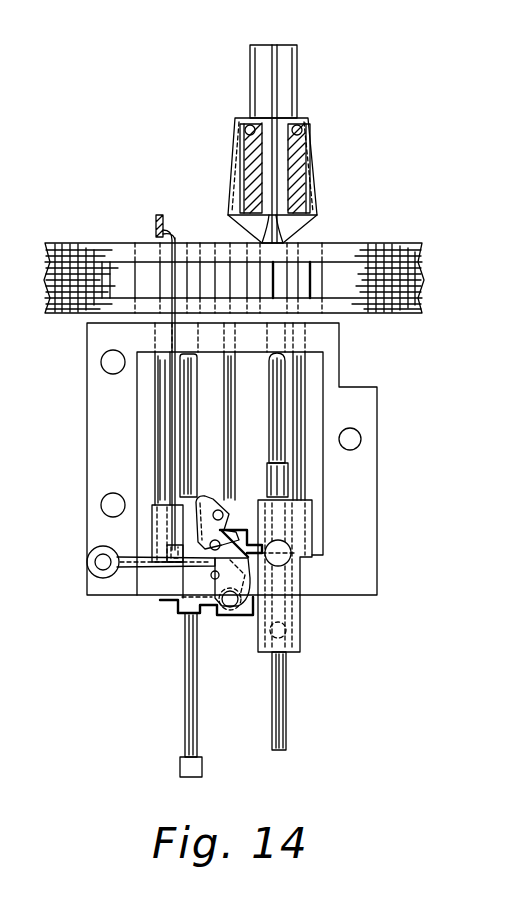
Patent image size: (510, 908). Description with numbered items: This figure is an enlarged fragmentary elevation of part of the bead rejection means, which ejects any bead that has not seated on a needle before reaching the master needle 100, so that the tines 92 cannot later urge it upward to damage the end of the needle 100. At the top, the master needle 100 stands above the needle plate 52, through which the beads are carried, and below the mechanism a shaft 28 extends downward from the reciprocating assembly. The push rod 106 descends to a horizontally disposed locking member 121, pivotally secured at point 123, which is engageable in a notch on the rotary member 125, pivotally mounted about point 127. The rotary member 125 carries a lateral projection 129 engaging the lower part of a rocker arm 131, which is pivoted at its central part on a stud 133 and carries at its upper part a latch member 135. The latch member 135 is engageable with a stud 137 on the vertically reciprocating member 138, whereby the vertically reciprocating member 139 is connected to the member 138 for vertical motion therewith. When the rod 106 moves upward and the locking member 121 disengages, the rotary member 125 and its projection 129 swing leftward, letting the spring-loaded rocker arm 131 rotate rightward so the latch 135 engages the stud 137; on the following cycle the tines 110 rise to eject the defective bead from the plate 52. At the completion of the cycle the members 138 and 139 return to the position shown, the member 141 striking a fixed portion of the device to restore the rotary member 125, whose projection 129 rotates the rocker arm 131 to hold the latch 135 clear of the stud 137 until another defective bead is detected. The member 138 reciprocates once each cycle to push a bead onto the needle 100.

The master needle 100 is at (285, 92).
The push rod 106 is at (176, 238).
The needle plate 52 is at (416, 256).
The tines 110 is at (186, 388).
The tines 92 is at (278, 385).
The vertically reciprocating member 138 is at (330, 515).
The shaft 28 is at (289, 727).
The vertically reciprocating member 139 is at (152, 543).
The locking member 121 is at (165, 562).
The pivot point 123 is at (100, 574).
The stud 137 is at (216, 500).
The latch member 135 is at (213, 540).
The stud 133 is at (238, 528).
The pivot point 127 is at (230, 608).
The projection 129 is at (212, 578).
The rotary member 125 is at (207, 612).
The rocker arm 131 is at (165, 566).
The striking member 141 is at (185, 733).